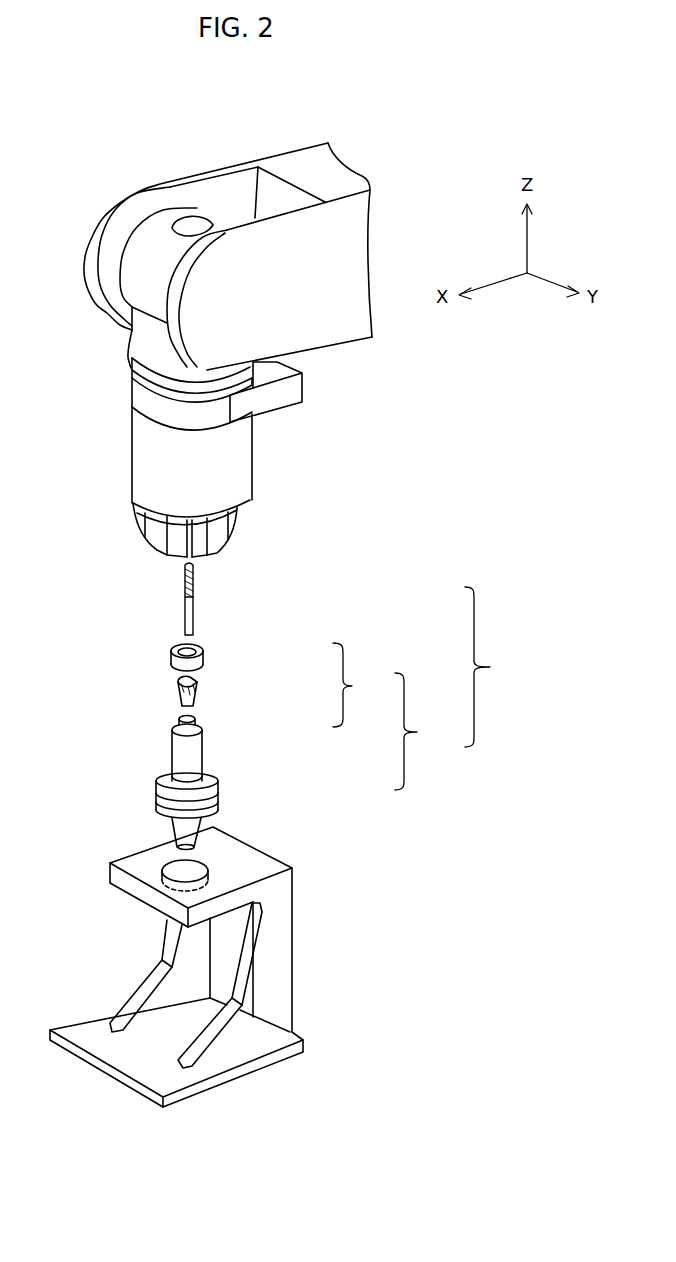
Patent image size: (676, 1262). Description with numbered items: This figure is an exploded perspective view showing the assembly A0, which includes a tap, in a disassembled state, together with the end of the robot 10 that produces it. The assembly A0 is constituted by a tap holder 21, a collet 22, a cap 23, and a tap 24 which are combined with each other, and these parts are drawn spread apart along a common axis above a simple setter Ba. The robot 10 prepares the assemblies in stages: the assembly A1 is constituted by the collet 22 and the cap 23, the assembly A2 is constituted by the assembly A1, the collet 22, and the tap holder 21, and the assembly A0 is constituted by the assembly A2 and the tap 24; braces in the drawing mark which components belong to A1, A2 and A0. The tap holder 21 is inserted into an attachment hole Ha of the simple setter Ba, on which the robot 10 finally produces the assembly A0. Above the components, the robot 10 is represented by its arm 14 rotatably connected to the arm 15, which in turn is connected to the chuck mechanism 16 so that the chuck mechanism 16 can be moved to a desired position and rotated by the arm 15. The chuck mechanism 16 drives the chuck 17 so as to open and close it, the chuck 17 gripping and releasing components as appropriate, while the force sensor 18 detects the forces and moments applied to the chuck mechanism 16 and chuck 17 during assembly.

The robot 10 is at (86, 216).
The arm 14 is at (230, 165).
The arm 15 is at (146, 273).
The chuck mechanism 16 is at (131, 440).
The chuck 17 is at (138, 532).
The force sensor 18 is at (210, 407).
The tap holder 21 is at (218, 780).
The collet 22 is at (195, 693).
The cap 23 is at (205, 652).
The tap 24 is at (193, 593).
The attachment hole Ha is at (208, 866).
The simple setter Ba is at (270, 963).
The assembly A0 is at (494, 667).
The assembly A1 is at (362, 685).
The assembly A2 is at (424, 731).